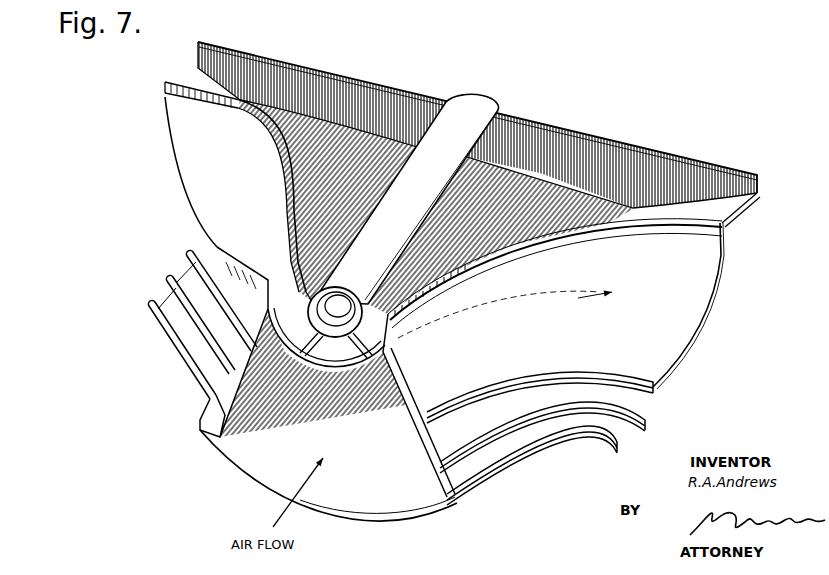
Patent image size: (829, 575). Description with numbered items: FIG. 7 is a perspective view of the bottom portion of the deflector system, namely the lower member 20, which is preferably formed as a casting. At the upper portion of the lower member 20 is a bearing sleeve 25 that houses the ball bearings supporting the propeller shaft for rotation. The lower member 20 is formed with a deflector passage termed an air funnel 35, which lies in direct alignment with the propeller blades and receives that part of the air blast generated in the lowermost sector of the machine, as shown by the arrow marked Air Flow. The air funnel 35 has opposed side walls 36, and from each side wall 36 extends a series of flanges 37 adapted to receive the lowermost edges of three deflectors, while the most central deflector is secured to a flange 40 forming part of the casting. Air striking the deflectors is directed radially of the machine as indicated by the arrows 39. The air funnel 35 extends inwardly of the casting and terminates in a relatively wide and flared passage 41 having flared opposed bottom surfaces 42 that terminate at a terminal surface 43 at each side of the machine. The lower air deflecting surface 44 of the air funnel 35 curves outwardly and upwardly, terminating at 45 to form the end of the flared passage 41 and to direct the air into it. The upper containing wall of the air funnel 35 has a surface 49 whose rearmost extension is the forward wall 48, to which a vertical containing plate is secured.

The lower member 20 is at (564, 128).
The bearing sleeve 25 is at (405, 223).
The air funnel 35 is at (376, 466).
The side walls 36 is at (200, 412).
The flanges 37 is at (232, 334).
The arrows 39 is at (207, 173).
The flange 40 is at (293, 212).
The flared passage 41 is at (598, 158).
The flared opposed bottom surfaces 42 is at (200, 67).
The terminal surface 43 is at (193, 74).
The lower air deflecting surface 44 is at (322, 507).
The terminal surface 45 is at (421, 102).
The forward wall 48 is at (347, 128).
The upper containing wall surface 49 is at (318, 373).